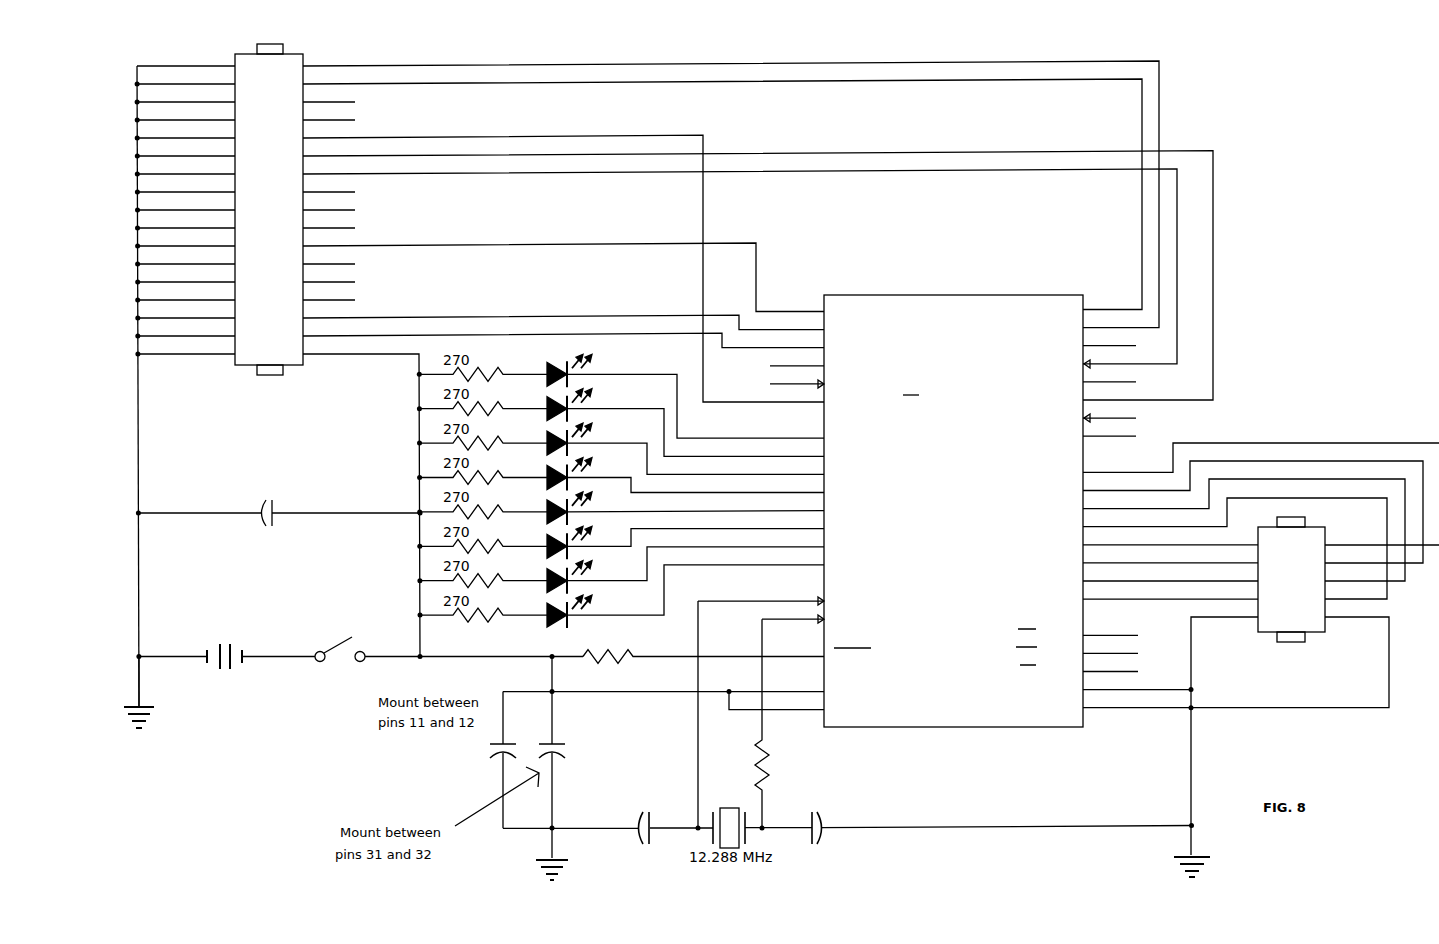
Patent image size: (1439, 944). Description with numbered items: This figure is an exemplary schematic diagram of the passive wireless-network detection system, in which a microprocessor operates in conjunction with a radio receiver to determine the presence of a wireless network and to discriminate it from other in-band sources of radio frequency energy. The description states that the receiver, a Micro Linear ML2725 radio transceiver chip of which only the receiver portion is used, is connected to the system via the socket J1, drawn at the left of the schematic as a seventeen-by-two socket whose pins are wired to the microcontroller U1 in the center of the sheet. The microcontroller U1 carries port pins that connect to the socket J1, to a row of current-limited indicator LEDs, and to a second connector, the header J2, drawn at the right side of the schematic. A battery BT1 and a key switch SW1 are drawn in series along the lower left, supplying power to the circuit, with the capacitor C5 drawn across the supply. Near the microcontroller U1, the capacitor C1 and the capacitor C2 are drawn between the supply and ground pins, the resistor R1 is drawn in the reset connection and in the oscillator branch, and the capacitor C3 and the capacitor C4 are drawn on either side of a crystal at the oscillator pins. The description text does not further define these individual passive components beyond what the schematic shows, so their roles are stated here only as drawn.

The socket J1 is at (245, 369).
The PIC16C74A microcontroller U1 is at (954, 491).
The 5x2 header connector J2 is at (1296, 595).
The 0.1 uF decoupling capacitor C1 is at (478, 760).
The 0.1 uF decoupling capacitor C2 is at (575, 758).
The 22 pF crystal load capacitor C3 is at (639, 829).
The 22 pF crystal load capacitor C4 is at (814, 829).
The 10 uF capacitor C5 is at (279, 515).
The resistor (10K pull-up / 100 ohm) R1 is at (701, 723).
The battery BT1 is at (197, 660).
The SPST key switch SW1 is at (412, 660).